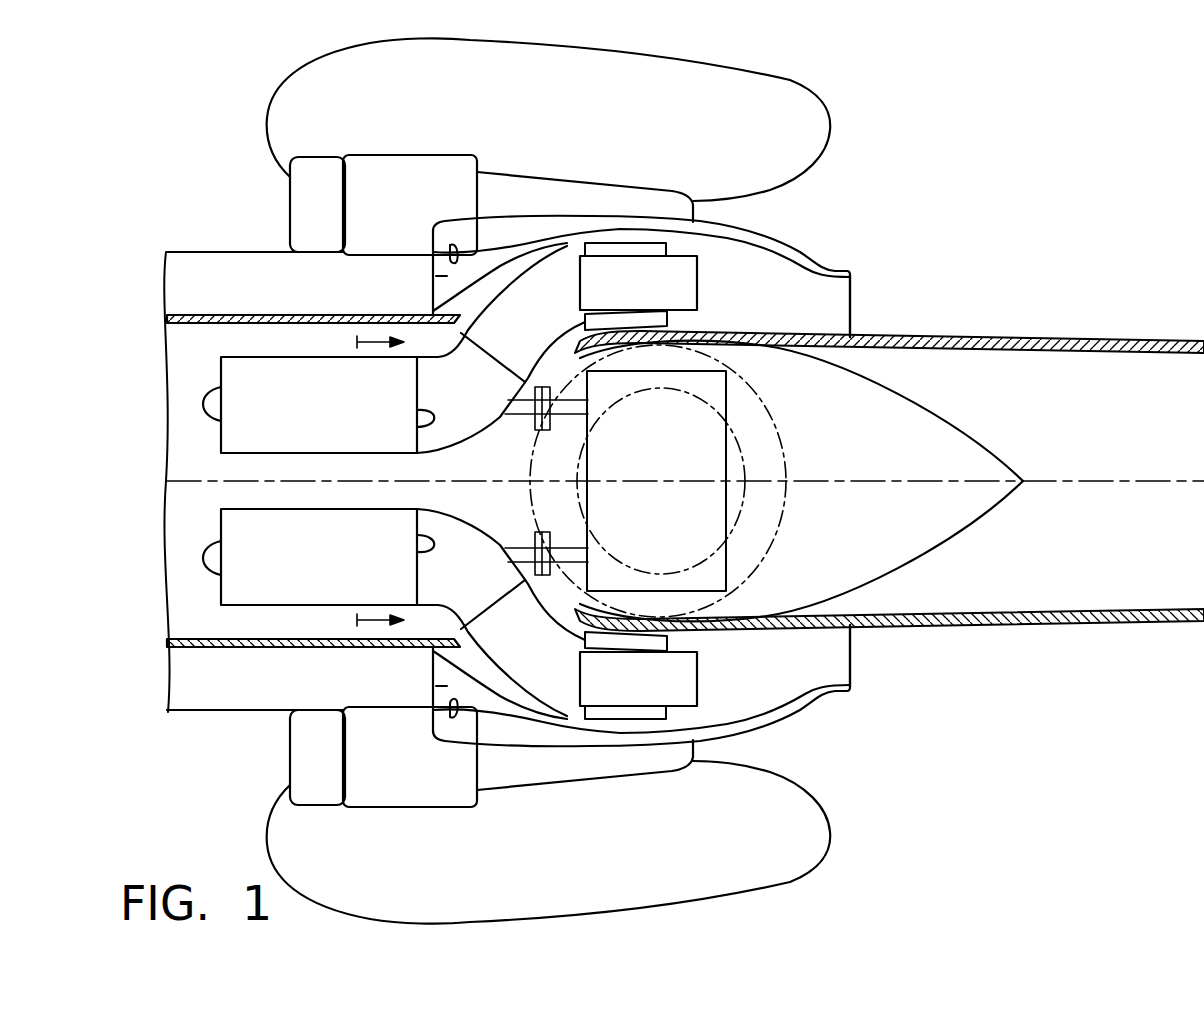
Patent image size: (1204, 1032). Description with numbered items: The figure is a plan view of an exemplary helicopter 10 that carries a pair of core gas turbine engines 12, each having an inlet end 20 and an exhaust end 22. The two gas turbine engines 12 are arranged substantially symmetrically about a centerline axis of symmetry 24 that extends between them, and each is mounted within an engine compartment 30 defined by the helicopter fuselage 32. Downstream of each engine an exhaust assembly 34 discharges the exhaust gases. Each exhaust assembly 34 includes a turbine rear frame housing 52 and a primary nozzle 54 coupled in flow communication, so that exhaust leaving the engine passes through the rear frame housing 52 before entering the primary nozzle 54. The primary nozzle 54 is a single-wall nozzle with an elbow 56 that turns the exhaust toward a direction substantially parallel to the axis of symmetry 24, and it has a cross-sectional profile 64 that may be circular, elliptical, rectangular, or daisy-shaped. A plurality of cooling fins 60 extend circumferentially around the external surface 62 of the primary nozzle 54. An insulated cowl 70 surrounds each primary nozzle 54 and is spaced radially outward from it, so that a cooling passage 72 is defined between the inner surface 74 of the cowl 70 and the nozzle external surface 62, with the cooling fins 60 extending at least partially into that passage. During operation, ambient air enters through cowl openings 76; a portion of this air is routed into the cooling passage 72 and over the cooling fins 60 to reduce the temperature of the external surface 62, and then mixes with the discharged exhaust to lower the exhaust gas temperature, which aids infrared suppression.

The helicopter 10 is at (917, 118).
The core gas turbine engine 12 is at (284, 416).
The inlet end 20 is at (166, 481).
The exhaust end 22 is at (388, 479).
The axis of symmetry 24 is at (1068, 470).
The engine compartment 30 is at (254, 358).
The helicopter fuselage 32 is at (313, 481).
The exhaust assembly 34 is at (458, 481).
The turbine rear frame housing 52 is at (434, 399).
The primary nozzle 54 is at (612, 294).
The elbow 56 is at (494, 480).
The cooling fins 60 is at (889, 480).
The external surface 62 is at (641, 479).
The cross-sectional profile 64 is at (776, 480).
The insulated cowl 70 is at (585, 480).
The cooling passage 72 is at (346, 481).
The inner surface 74 is at (428, 480).
The cowl openings 76 is at (401, 481).